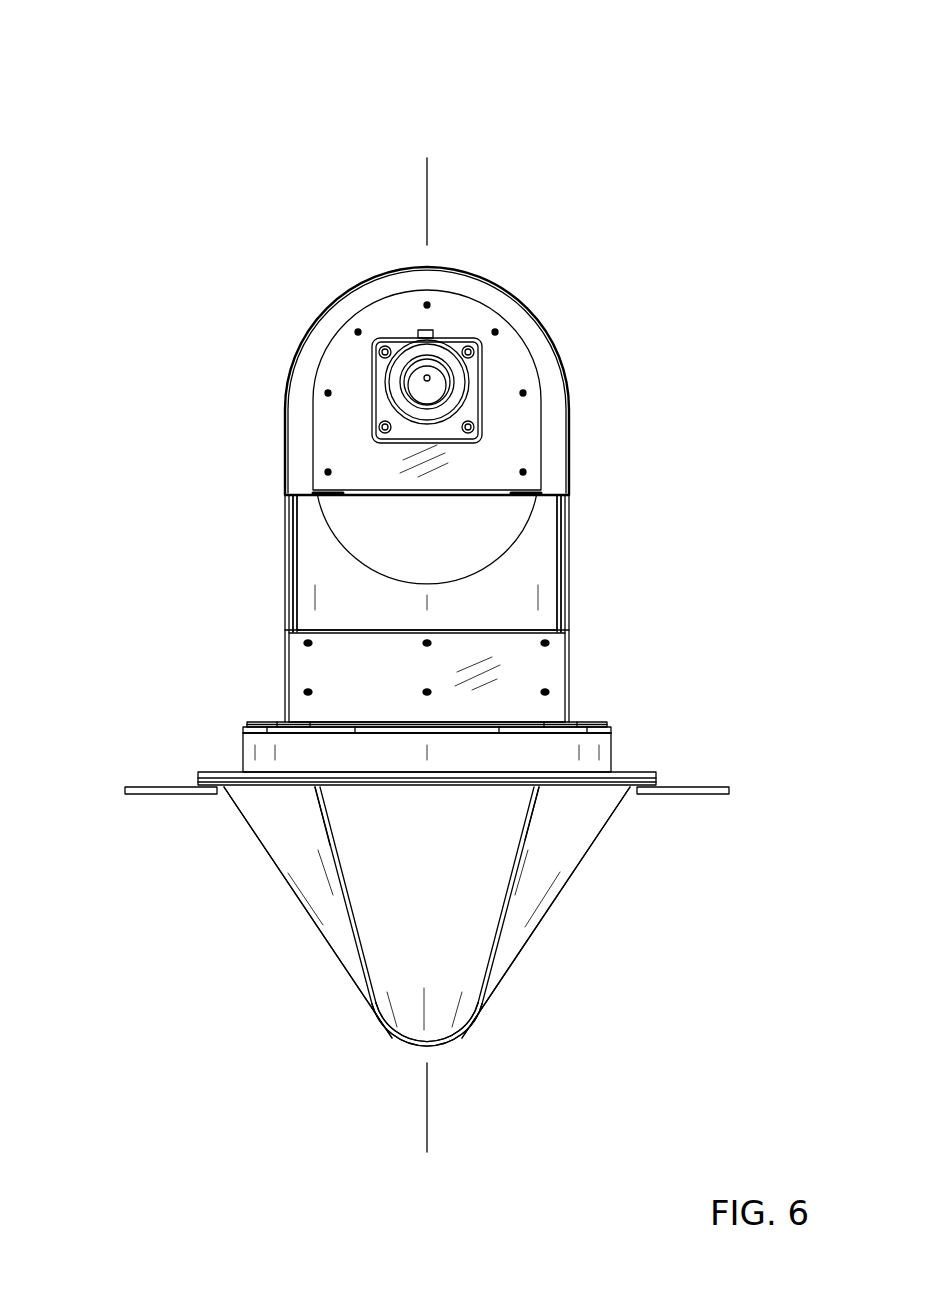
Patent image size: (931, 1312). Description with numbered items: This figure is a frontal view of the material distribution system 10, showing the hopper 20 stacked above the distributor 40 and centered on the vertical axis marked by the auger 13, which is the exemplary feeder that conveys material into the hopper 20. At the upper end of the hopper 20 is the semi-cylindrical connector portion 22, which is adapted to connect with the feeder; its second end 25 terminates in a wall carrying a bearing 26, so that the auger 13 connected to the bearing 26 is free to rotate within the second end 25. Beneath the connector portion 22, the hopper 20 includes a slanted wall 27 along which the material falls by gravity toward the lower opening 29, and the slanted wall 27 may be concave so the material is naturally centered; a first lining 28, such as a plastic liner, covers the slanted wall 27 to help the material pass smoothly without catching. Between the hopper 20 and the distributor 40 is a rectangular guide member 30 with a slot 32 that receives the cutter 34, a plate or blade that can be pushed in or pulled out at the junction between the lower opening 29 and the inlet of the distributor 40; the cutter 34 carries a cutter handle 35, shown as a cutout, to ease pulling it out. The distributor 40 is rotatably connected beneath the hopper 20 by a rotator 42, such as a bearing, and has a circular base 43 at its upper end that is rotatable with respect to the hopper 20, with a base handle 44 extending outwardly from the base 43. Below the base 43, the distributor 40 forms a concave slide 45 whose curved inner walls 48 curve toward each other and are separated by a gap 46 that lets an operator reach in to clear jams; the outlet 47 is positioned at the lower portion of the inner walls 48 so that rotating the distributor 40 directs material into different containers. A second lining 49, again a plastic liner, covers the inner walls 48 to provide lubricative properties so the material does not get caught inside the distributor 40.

The lighting fixture assembly 10 is at (148, 144).
The auger 13 is at (432, 202).
The hopper 20 is at (566, 341).
The connector portion 22 is at (388, 313).
The second end 25 is at (480, 472).
The bearing 26 is at (450, 387).
The slanted wall 27 is at (528, 560).
The first lining 28 is at (308, 527).
The lower opening 29 is at (390, 1040).
The guide member 30 is at (604, 712).
The slot 32 is at (275, 722).
The cutter 34 is at (312, 730).
The cutter handle 35 is at (468, 727).
The distributor 40 is at (576, 906).
The rotator 42 is at (243, 752).
The base 43 is at (637, 775).
The base handle 44 is at (140, 795).
The slide 45 is at (468, 828).
The gap 46 is at (402, 915).
The outlet 47 is at (450, 1043).
The inner walls 48 is at (515, 940).
The second lining 49 is at (313, 803).